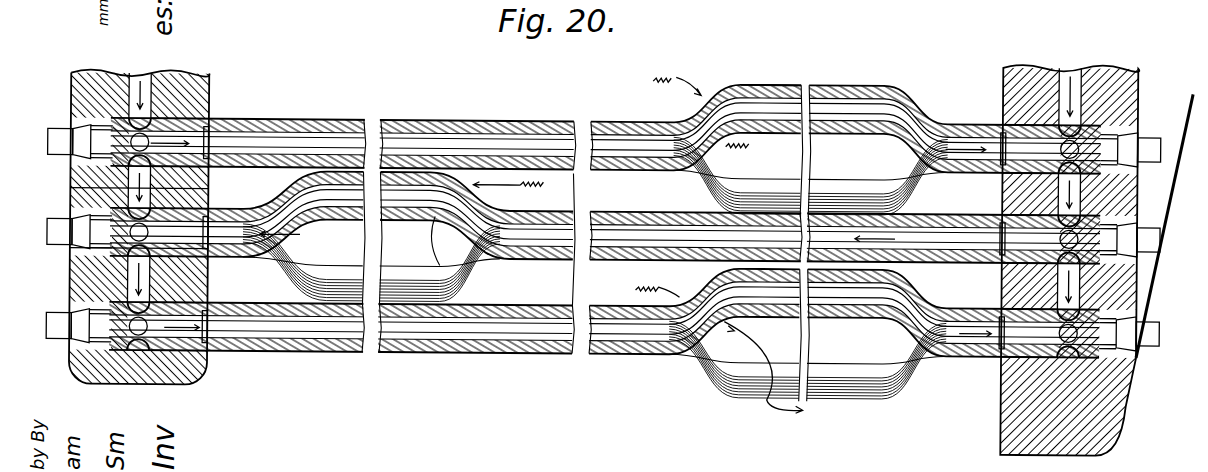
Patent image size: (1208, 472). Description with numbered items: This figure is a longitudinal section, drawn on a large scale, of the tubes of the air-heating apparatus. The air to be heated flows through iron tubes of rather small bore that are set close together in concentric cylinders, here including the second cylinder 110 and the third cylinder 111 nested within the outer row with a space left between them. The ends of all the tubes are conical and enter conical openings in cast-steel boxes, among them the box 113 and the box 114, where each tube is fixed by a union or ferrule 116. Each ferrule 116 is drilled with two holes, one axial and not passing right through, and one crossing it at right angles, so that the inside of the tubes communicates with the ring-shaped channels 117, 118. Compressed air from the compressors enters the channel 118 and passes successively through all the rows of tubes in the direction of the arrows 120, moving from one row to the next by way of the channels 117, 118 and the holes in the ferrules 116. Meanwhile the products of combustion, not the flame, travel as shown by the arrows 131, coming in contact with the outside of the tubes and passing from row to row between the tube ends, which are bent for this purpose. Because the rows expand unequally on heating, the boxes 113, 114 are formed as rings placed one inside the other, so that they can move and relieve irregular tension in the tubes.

The second cylinder of tubes 110 is at (351, 210).
The third cylinder of tubes 111 is at (787, 116).
The cast-steel box 113 is at (123, 373).
The cast-steel box 114 is at (82, 95).
The union or ferrule 116 is at (72, 152).
The ring-shaped channel 117 is at (614, 196).
The ring-shaped channel 118 is at (999, 367).
The arrows indicating air flow 120 is at (150, 90).
The arrows indicating products of combustion 131 is at (453, 198).